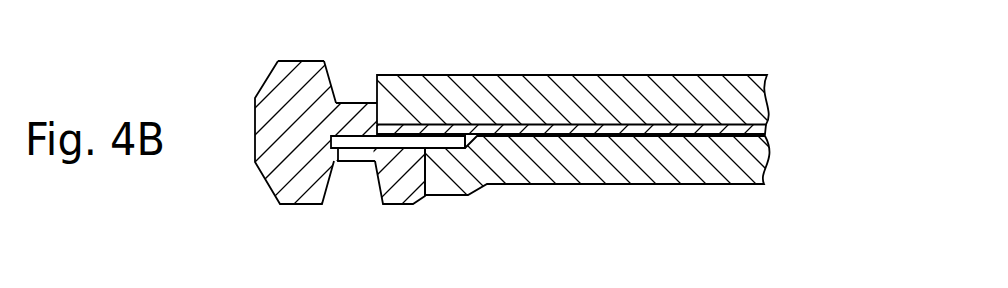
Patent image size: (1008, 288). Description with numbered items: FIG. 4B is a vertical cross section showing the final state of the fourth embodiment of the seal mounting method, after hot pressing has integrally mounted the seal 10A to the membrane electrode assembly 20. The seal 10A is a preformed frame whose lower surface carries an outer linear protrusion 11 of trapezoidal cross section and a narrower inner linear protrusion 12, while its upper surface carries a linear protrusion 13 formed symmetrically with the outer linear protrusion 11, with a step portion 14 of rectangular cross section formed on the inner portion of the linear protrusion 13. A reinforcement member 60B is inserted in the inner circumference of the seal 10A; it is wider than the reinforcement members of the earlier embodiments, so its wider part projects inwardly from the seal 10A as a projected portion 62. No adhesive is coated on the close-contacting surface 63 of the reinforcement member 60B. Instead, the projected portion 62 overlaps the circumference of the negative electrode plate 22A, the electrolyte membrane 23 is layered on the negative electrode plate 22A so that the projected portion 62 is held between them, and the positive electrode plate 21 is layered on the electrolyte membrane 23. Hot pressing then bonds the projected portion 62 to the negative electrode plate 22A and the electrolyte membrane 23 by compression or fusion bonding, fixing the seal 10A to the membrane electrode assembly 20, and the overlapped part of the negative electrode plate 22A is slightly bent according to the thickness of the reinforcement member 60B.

The seal 10A is at (379, 138).
The outer linear protrusion 11 is at (261, 180).
The inner linear protrusion 12 is at (408, 206).
The linear protrusion 13 is at (300, 59).
The step portion 14 is at (352, 101).
The membrane electrode assembly 20 is at (595, 79).
The positive electrode plate 21 is at (710, 74).
The negative electrode plate 22A is at (578, 185).
The electrolyte membrane 23 is at (608, 127).
The reinforcement member 60B is at (350, 143).
The projected portion 62 is at (458, 140).
The close-contacting surface 63 is at (423, 146).